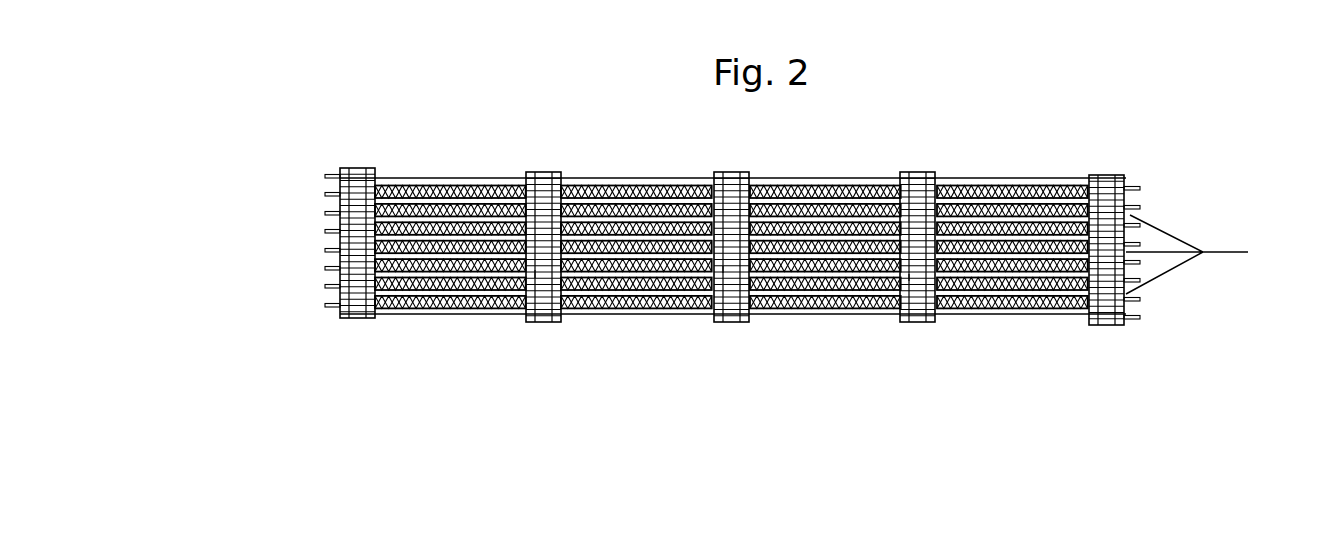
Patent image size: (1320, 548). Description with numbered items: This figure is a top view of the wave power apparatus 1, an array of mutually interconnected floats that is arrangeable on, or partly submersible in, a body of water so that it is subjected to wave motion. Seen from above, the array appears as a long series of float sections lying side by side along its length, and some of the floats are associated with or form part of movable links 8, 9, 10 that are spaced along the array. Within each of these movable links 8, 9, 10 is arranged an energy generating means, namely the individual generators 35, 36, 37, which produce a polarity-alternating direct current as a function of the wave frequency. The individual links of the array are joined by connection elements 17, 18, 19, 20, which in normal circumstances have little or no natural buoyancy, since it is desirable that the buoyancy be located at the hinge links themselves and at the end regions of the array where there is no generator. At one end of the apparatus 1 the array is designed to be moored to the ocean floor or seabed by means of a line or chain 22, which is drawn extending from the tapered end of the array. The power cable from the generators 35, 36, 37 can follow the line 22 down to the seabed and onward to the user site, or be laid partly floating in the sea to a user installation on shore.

The wave power apparatus 1 is at (1240, 187).
The movable link 8 is at (927, 149).
The movable link 9 is at (705, 152).
The movable link 10 is at (525, 152).
The connection element 17 is at (1009, 326).
The connection element 18 is at (832, 326).
The connection element 19 is at (637, 326).
The connection element 20 is at (460, 326).
The line or chain 22 is at (1212, 246).
The generator 35 is at (913, 273).
The generator 36 is at (722, 265).
The generator 37 is at (533, 270).